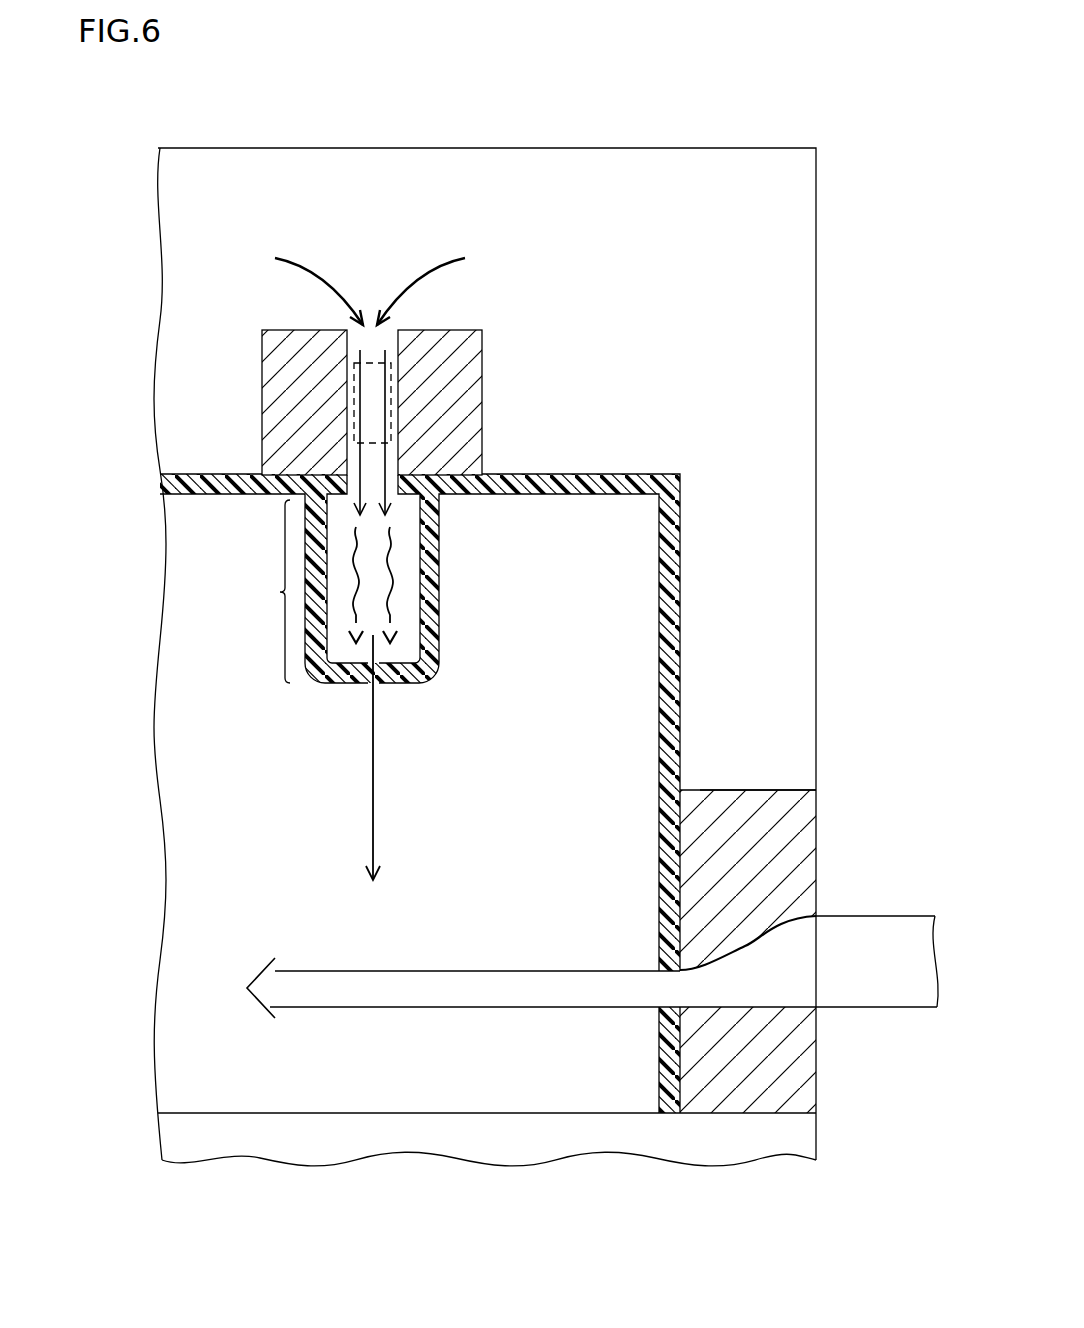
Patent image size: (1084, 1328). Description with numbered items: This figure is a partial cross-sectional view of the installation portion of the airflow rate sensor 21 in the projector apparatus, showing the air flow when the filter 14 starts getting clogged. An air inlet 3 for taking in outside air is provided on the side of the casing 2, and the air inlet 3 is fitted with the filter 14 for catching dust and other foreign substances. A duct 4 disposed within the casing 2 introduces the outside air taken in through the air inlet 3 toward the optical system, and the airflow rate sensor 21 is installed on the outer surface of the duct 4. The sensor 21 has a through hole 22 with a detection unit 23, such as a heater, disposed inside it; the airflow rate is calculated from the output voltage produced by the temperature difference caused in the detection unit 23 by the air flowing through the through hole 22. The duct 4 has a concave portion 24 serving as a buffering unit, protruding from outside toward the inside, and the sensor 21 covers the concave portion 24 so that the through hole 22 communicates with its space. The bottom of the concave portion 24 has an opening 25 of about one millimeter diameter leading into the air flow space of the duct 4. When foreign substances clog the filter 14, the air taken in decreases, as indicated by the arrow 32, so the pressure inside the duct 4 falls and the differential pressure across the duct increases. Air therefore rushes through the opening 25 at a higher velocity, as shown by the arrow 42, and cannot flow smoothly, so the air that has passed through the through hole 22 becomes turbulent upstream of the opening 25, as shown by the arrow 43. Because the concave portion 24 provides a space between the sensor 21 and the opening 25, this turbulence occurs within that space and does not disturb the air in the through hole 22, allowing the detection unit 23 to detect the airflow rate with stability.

The casing 2 is at (816, 248).
The air inlet 3 is at (750, 790).
The duct 4 is at (668, 575).
The filter 14 is at (765, 845).
The airflow rate sensor 21 is at (460, 383).
The through hole 22 is at (390, 349).
The detection unit 23 is at (354, 400).
The concave portion 24 is at (261, 591).
The opening 25 is at (369, 683).
The arrow 32 is at (888, 1007).
The arrow 42 is at (373, 795).
The arrow 43 is at (392, 615).